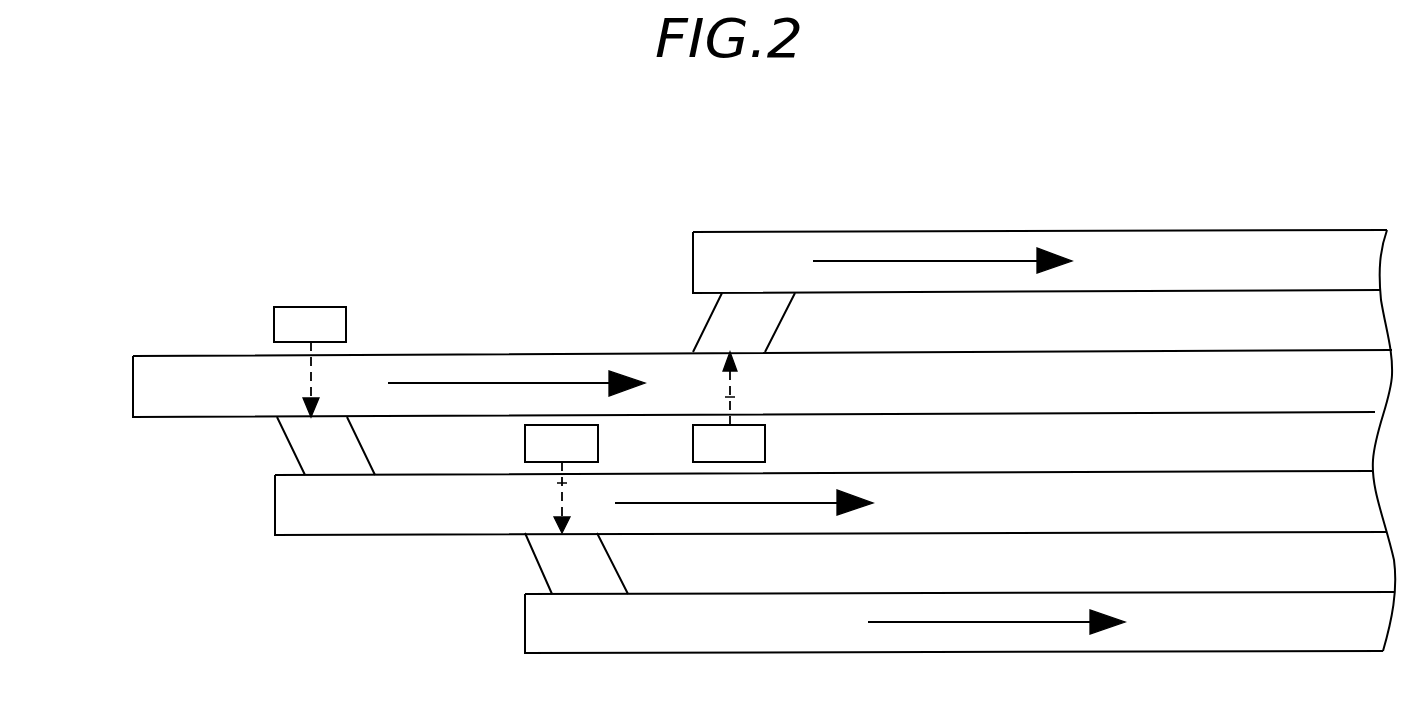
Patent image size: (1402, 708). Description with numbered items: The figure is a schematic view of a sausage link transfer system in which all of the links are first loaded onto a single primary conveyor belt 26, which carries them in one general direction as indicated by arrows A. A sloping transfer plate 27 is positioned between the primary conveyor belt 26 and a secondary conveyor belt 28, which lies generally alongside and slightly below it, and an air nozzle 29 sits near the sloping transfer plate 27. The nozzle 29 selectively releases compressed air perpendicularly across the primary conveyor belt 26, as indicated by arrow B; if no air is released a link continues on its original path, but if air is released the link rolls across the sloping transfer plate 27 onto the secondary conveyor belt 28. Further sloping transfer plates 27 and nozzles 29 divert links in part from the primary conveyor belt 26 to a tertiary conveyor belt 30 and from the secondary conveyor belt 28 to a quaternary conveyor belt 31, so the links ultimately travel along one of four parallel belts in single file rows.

The primary conveyor belt 26 is at (162, 385).
The sloping transfer plate 27 is at (703, 322).
The secondary conveyor belt 28 is at (347, 510).
The air nozzle 29 is at (310, 307).
The tertiary conveyor belt 30 is at (717, 263).
The quaternary conveyor belt 31 is at (717, 622).
The arrows indicating direction of travel A is at (512, 382).
The arrow indicating direction of compressed air B is at (308, 367).